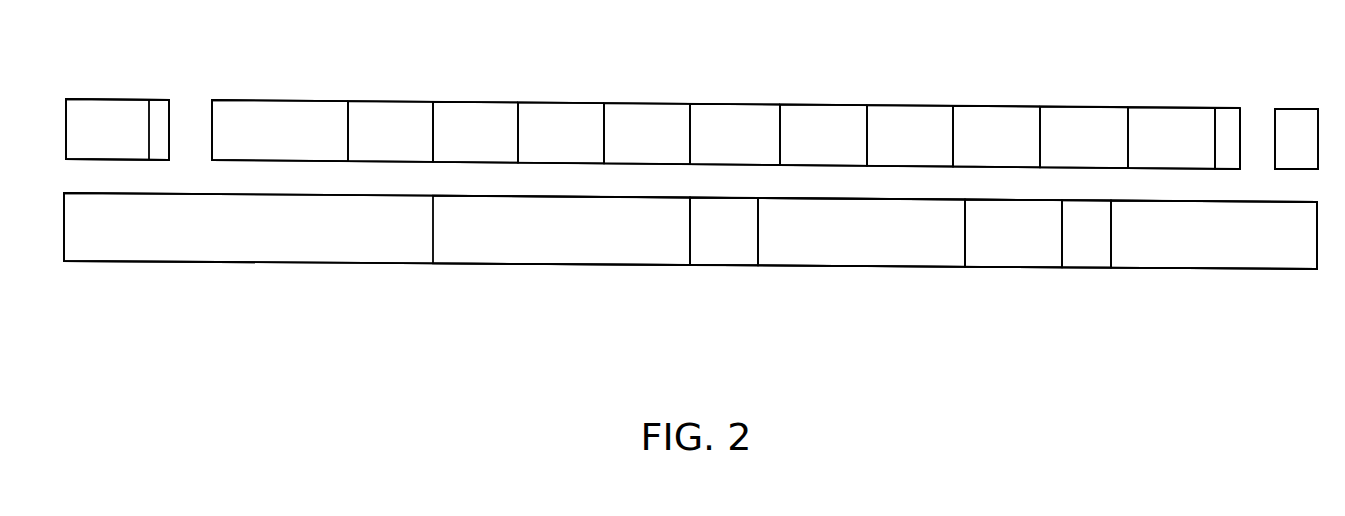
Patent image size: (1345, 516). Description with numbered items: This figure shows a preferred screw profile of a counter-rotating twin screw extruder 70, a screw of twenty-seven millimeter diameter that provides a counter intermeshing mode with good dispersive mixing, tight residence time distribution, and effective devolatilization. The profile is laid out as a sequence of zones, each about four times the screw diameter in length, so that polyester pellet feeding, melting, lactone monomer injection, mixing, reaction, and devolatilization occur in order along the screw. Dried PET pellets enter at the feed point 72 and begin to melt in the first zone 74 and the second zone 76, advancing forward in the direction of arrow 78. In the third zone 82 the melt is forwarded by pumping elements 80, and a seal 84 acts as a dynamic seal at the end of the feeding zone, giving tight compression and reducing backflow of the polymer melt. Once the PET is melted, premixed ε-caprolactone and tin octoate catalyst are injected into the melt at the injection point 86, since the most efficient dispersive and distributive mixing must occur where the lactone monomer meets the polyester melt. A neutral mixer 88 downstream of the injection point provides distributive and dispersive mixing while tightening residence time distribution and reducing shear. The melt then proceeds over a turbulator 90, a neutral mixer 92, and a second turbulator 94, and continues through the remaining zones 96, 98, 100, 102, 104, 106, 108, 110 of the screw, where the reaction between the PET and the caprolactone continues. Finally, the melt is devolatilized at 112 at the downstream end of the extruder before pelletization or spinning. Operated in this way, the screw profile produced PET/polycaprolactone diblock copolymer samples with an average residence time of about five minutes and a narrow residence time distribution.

The twin screw extruder 70 is at (1338, 283).
The feed point 72 is at (1258, 110).
The first zone 74 is at (1215, 108).
The second zone 76 is at (1128, 107).
The arrow 78 is at (1212, 184).
The pumping elements 80 is at (1199, 247).
The third zone 82 is at (1040, 107).
The seal 84 is at (1071, 246).
The injection point 86 is at (994, 124).
The neutral mixer 88 is at (996, 246).
The turbulator 90 is at (847, 244).
The neutral mixer 92 is at (705, 243).
The turbulator 94 is at (551, 242).
The zone 96 is at (953, 106).
The zone 98 is at (867, 105).
The zone 100 is at (780, 104).
The zone 102 is at (690, 104).
The zone 104 is at (604, 103).
The zone 106 is at (518, 102).
The zone 108 is at (433, 102).
The zone 110 is at (348, 101).
The devolatilization point 112 is at (191, 110).